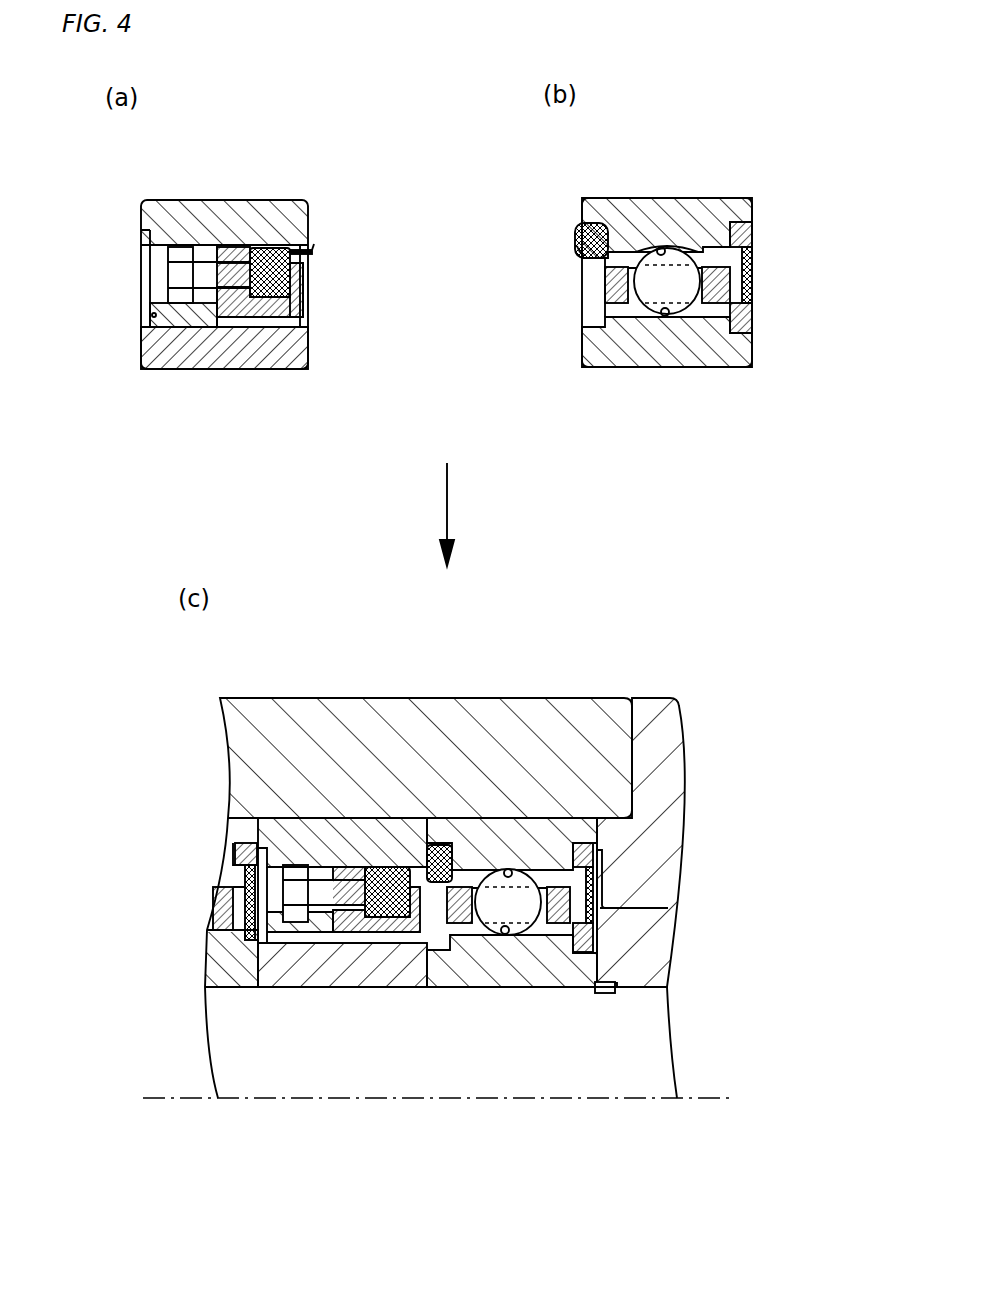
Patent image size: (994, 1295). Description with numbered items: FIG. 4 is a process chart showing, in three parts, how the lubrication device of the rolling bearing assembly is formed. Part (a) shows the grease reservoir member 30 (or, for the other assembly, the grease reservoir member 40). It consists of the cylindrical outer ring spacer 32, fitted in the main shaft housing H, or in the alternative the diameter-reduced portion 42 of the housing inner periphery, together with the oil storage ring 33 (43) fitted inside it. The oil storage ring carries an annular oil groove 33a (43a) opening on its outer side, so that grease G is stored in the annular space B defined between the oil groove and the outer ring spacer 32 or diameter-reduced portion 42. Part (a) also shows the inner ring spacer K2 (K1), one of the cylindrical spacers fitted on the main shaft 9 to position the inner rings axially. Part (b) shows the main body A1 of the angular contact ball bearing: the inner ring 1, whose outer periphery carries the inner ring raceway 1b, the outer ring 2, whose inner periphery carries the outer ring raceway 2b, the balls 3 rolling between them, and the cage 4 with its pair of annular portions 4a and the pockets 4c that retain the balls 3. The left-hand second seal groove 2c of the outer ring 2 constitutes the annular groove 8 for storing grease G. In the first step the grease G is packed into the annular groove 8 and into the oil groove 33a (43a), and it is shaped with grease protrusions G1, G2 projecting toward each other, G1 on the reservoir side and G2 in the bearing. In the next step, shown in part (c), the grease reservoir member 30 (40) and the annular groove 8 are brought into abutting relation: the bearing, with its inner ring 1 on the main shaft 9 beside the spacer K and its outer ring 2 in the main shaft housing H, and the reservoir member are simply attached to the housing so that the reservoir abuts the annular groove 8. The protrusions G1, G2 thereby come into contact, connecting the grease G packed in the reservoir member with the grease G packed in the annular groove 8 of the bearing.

The inner ring 1 is at (621, 671).
The inner ring raceway 1b is at (666, 314).
The outer ring 2 is at (609, 508).
The outer ring raceway 2b is at (676, 272).
The second seal groove 2c is at (582, 230).
The ball 3 is at (742, 230).
The cage 4 is at (590, 585).
The annular portion 4a is at (617, 280).
The pocket 4c is at (692, 290).
The annular groove 8 is at (517, 507).
The main shaft 9 is at (645, 1040).
The grease reservoir member 30 is at (200, 351).
The grease reservoir member 40 is at (188, 365).
The outer ring spacer 32 is at (284, 541).
The diameter-reduced portion 42 is at (205, 212).
The oil storage ring 33 is at (258, 352).
The oil storage ring 43 is at (236, 300).
The annular oil groove 33a is at (294, 350).
The annular oil groove 43a is at (295, 305).
The main body of the angular contact ball bearing A1 is at (698, 180).
The annular space B is at (328, 529).
The grease G is at (330, 529).
The grease protrusion G1 is at (313, 253).
The grease protrusion G2 is at (578, 250).
The main shaft housing H is at (583, 708).
The shaft member K is at (352, 968).
The inner ring spacer K1 is at (145, 368).
The inner ring spacer K2 is at (201, 392).